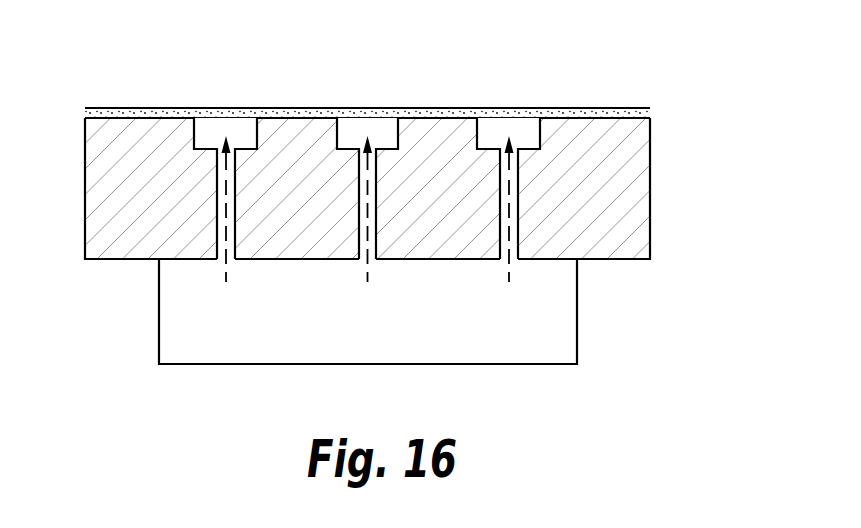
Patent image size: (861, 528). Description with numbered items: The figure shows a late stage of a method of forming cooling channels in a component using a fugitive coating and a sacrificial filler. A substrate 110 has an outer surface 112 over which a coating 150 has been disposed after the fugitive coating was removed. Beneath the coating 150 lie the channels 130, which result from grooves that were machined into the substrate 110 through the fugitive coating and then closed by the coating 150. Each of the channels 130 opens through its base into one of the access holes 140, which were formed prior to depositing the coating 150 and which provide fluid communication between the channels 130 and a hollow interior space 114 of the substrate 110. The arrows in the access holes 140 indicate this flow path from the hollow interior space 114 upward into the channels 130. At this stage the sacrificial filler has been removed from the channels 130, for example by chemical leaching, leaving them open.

The substrate 110 is at (633, 208).
The outer surface 112 is at (101, 123).
The hollow interior space 114 is at (552, 308).
The channels 130 is at (215, 127).
The access holes 140 is at (232, 261).
The coating 150 is at (123, 112).